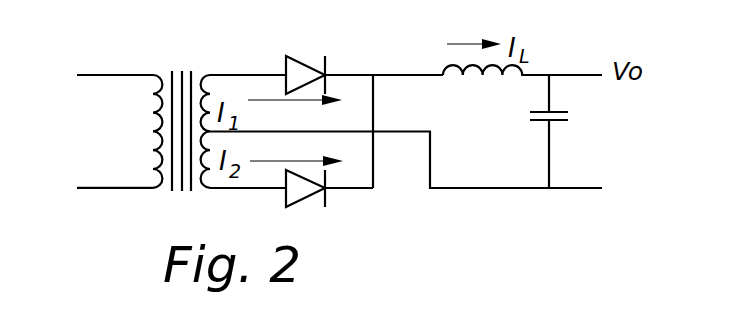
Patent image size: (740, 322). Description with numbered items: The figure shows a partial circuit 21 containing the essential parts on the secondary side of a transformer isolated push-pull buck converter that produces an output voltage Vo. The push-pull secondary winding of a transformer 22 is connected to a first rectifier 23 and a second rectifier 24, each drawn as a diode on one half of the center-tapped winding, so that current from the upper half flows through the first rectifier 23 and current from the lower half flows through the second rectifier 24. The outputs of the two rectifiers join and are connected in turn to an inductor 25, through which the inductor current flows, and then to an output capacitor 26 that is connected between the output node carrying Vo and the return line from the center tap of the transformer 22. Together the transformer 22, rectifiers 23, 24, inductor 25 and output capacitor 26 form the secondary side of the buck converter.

The partial circuit 21 is at (143, 33).
The transformer 22 is at (185, 62).
The first rectifier 23 is at (293, 50).
The second rectifier 24 is at (317, 206).
The inductor 25 is at (437, 62).
The output capacitor 26 is at (584, 113).